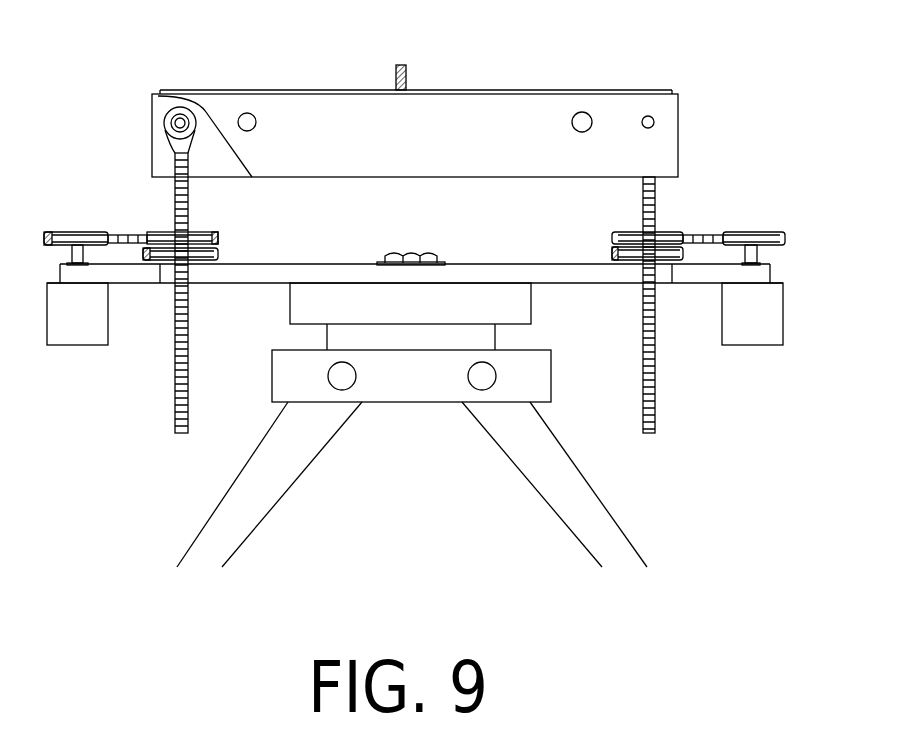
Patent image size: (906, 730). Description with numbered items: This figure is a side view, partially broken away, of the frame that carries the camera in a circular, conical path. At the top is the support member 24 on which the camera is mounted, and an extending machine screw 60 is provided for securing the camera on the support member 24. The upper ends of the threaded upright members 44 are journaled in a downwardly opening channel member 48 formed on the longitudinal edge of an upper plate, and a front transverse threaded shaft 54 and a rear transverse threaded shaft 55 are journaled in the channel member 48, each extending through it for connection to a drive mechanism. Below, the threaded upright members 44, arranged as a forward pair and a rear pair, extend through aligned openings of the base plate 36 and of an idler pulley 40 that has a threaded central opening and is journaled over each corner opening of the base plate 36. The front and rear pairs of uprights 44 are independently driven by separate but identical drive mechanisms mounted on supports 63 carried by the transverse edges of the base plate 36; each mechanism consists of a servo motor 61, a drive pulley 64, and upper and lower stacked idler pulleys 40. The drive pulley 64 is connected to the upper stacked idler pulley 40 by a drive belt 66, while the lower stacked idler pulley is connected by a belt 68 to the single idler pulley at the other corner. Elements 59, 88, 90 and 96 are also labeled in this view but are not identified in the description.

The support member 24 is at (468, 90).
The base plate 36 is at (580, 283).
The idler pulley 40 is at (165, 232).
The threaded upright member 44 is at (190, 196).
The channel member 48 is at (463, 150).
The front transverse threaded shaft 54 is at (252, 132).
The rear transverse threaded shaft 55 is at (593, 122).
The pin 59 is at (172, 131).
The extending machine screw 60 is at (407, 65).
The servo motor 61 is at (68, 327).
The support 63 is at (130, 275).
The drive pulley 64 is at (77, 232).
The drive belt 66 is at (219, 238).
The belt 68 is at (219, 257).
The support leg 88 is at (507, 302).
The eye bolt 90 is at (163, 125).
The fastener hole 96 is at (657, 114).